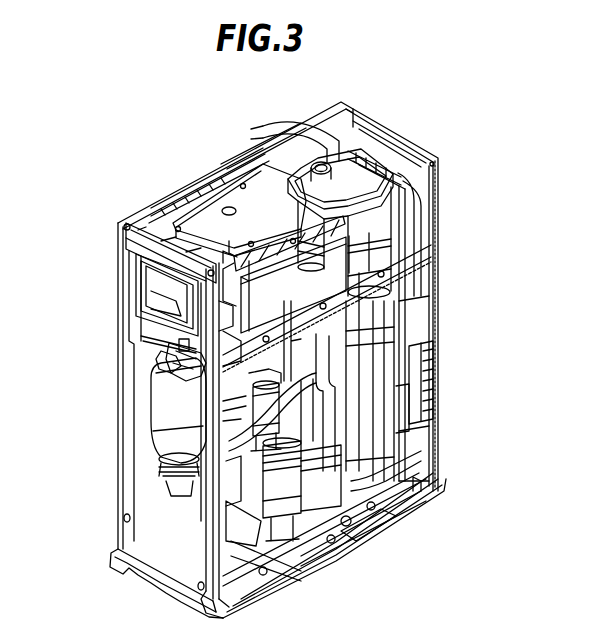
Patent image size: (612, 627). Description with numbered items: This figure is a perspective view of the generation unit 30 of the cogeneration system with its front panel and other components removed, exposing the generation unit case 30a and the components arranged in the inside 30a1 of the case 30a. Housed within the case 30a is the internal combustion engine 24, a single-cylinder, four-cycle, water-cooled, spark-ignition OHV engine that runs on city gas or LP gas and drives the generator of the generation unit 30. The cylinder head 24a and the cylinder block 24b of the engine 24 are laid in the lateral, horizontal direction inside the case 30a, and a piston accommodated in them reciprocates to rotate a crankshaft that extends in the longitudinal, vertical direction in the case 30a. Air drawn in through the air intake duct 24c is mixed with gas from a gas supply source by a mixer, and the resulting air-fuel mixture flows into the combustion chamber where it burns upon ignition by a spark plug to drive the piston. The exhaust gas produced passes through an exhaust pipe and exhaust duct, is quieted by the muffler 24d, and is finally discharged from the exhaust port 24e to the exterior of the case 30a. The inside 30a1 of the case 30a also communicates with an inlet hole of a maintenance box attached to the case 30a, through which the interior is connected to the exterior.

The generation unit 30 is at (382, 150).
The generation unit case 30a is at (137, 212).
The inside of the case 30a1 is at (173, 372).
The internal combustion engine 24 is at (168, 398).
The cylinder head 24a is at (183, 410).
The cylinder block 24b is at (247, 408).
The air intake duct 24c is at (284, 160).
The muffler 24d is at (377, 226).
The exhaust port 24e is at (324, 172).